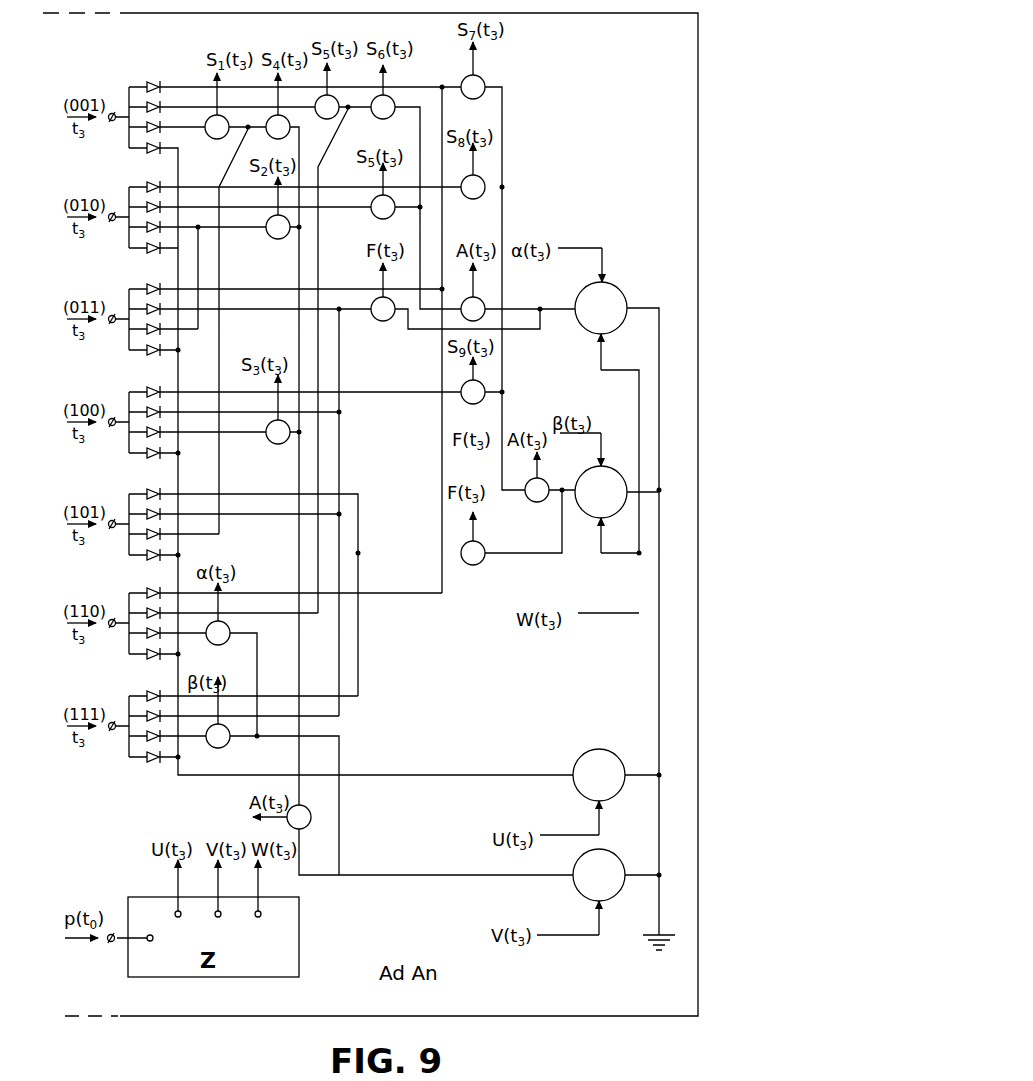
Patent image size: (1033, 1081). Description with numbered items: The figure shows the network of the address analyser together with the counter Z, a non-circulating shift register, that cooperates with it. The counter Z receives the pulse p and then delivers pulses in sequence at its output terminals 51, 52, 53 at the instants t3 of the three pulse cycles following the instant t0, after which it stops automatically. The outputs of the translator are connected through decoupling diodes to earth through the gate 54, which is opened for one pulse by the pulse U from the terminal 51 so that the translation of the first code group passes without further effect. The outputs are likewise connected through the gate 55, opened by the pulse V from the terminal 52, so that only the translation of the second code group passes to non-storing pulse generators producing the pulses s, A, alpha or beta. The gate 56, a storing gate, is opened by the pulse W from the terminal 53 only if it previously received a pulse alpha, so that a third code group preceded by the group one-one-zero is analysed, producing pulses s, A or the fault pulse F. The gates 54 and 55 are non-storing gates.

The output terminal of counter Z 51 is at (177, 902).
The output terminal of counter Z 52 is at (217, 902).
The output terminal of counter Z 53 is at (257, 902).
The gate 54 is at (599, 775).
The gate 55 is at (599, 875).
The gate 56 is at (601, 308).